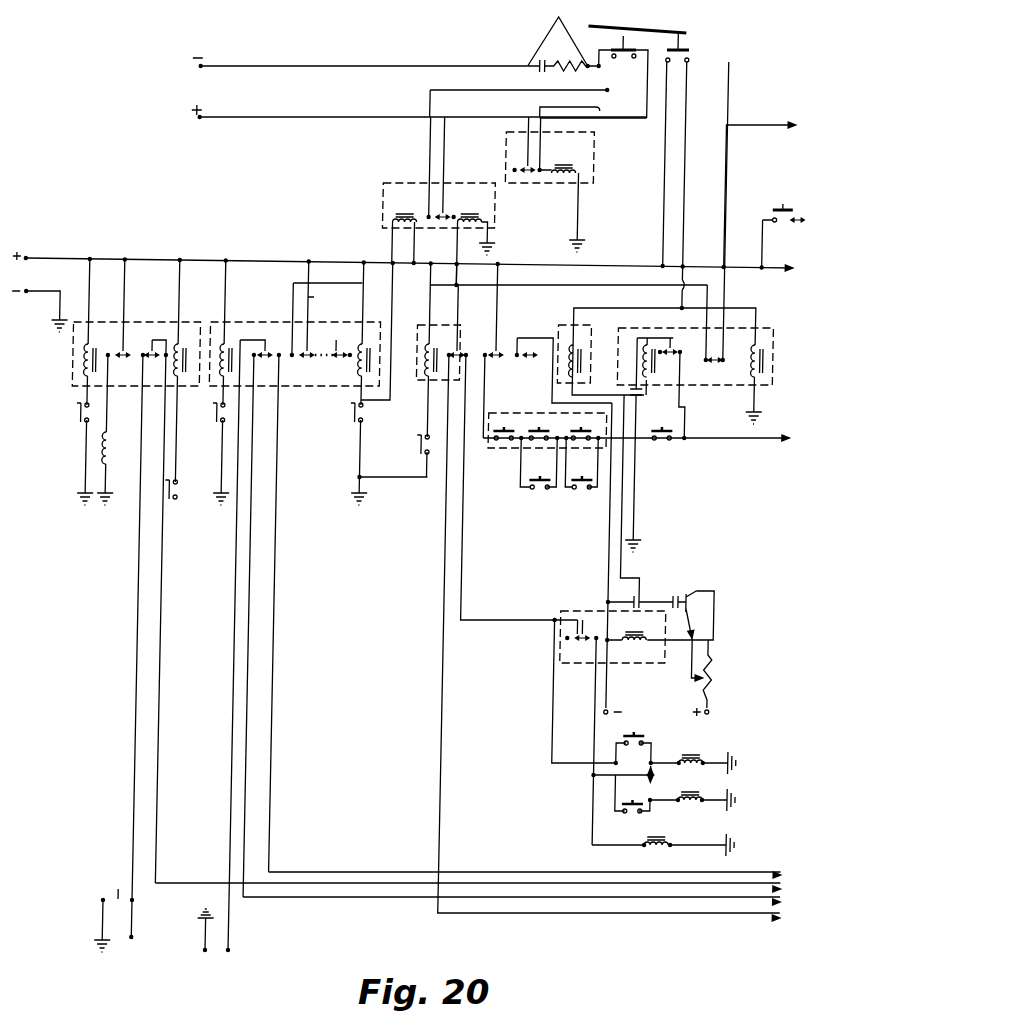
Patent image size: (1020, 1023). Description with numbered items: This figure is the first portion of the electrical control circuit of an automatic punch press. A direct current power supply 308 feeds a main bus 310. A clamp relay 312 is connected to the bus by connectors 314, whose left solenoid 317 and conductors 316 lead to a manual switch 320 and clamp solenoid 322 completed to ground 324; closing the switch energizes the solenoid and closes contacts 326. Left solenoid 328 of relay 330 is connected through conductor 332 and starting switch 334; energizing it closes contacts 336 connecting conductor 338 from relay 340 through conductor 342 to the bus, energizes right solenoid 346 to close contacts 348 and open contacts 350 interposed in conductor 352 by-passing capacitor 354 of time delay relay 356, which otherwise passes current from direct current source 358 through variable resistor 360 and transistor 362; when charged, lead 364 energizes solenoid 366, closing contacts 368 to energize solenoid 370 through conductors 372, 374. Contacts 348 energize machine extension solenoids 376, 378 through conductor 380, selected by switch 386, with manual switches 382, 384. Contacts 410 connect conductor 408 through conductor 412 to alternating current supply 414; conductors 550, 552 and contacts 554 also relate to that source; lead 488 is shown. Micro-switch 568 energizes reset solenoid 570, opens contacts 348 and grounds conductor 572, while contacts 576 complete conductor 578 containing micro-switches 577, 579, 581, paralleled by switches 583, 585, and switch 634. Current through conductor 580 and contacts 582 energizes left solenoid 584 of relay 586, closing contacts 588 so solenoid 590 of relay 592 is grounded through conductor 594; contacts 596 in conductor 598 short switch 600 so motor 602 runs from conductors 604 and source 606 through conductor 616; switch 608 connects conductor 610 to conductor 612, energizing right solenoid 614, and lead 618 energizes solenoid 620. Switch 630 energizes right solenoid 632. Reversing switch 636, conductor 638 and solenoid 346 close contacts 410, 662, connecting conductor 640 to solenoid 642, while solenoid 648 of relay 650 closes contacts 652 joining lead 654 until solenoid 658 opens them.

The direct current constant voltage power supply 308 is at (39, 302).
The main bus 310 is at (90, 258).
The clamp relay 312 is at (122, 332).
The connectors 314 is at (120, 310).
The conductors 316 is at (105, 415).
The left solenoid 317 is at (80, 357).
The manual switch 320 is at (76, 422).
The clamp solenoid 322 is at (107, 439).
The ground 324 is at (95, 498).
The switch contacts 326 is at (116, 352).
The left solenoid 328 is at (228, 346).
The relay 330 is at (290, 319).
The conductor 332 is at (221, 287).
The manually operable starting switch 334 is at (217, 420).
The switch contacts 336 is at (300, 356).
The conductor 338 is at (307, 281).
The relay 340 is at (497, 330).
The conductor 342 is at (310, 297).
The right solenoid 346 is at (357, 372).
The contacts 348 is at (458, 353).
The contacts 350 is at (529, 342).
The conductor 352 is at (610, 543).
The capacitor 354 is at (635, 596).
The relay 356 is at (596, 612).
The direct current source 358 is at (640, 712).
The variable resistor 360 is at (718, 681).
The transistor 362 is at (688, 594).
The lead 364 is at (716, 616).
The solenoid 366 is at (645, 657).
The contacts 368 is at (568, 640).
The solenoid 370 is at (676, 844).
The conductor 372 is at (599, 688).
The conductor 374 is at (464, 562).
The machine extension solenoid 376 is at (708, 760).
The machine extension solenoid 378 is at (718, 800).
The conductor 380 is at (556, 706).
The manually operated switch 382 is at (651, 745).
The manually operated switch 384 is at (636, 814).
The switch 386 is at (656, 777).
The conductor 408 is at (353, 905).
The switch contacts 410 is at (254, 364).
The conductor 412 is at (237, 576).
The alternating current power supply 414 is at (215, 930).
The output lead 488 is at (720, 163).
The conductor 550 is at (182, 885).
The ground terminal 552 is at (101, 916).
The contacts 554 is at (148, 361).
The micro-switch 568 is at (417, 449).
The reset solenoid 570 is at (425, 372).
The conductor 572 is at (444, 531).
The switch contacts 576 is at (498, 363).
The micro-switch 577 is at (495, 417).
The conductor 578 is at (732, 444).
The micro-switch 579 is at (529, 433).
The conductor 580 is at (683, 428).
The micro-switch 581 is at (575, 433).
The switch contacts 582 is at (670, 338).
The micro-switch 583 is at (532, 491).
The left solenoid 584 is at (640, 362).
The switch 585 is at (587, 492).
The relay 586 is at (704, 374).
The contacts 588 is at (710, 364).
The solenoid 590 is at (554, 164).
The relay 592 is at (588, 164).
The conductor 594 is at (572, 206).
The contacts 596 is at (522, 176).
The conductor 598 is at (589, 108).
The switch 600 is at (604, 60).
The electric motor 602 is at (540, 46).
The conductors 604 is at (316, 66).
The alternating current power source 606 is at (196, 88).
The switch 608 is at (682, 60).
The conductor 610 is at (680, 117).
The conductor 612 is at (736, 308).
The right solenoid 614 is at (756, 352).
The conductor 616 is at (639, 119).
The lead 618 is at (626, 309).
The solenoid 620 is at (598, 344).
The switch 630 is at (184, 498).
The right solenoid 632 is at (178, 342).
The switch 634 is at (654, 444).
The switch 636 is at (346, 424).
The conductor 638 is at (356, 469).
The conductor 640 is at (276, 717).
The solenoid 642 is at (388, 316).
The reset tape resetting solenoid 648 is at (387, 221).
The relay 650 is at (400, 192).
The contacts 652 is at (439, 212).
The lead 654 is at (439, 165).
The right solenoid 658 is at (476, 222).
The switch contacts 662 is at (775, 204).